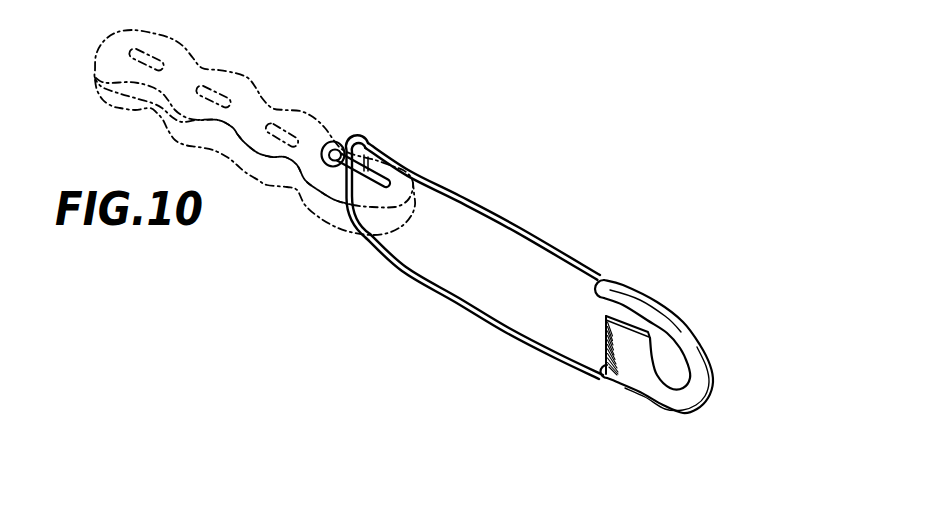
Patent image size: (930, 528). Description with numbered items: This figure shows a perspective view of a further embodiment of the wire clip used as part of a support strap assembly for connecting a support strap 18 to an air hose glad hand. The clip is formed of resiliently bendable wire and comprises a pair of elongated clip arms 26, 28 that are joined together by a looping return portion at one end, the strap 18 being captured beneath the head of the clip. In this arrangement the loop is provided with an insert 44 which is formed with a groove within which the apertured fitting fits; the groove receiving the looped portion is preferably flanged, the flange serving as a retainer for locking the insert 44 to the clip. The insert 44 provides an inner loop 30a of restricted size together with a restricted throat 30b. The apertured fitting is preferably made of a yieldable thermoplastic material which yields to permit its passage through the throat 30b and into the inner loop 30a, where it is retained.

The strap 18 is at (255, 80).
The clip arm 26 is at (390, 266).
The clip arm 28 is at (511, 211).
The inner loop 30a is at (683, 364).
The restricted throat 30b is at (600, 280).
The insert 44 is at (620, 346).